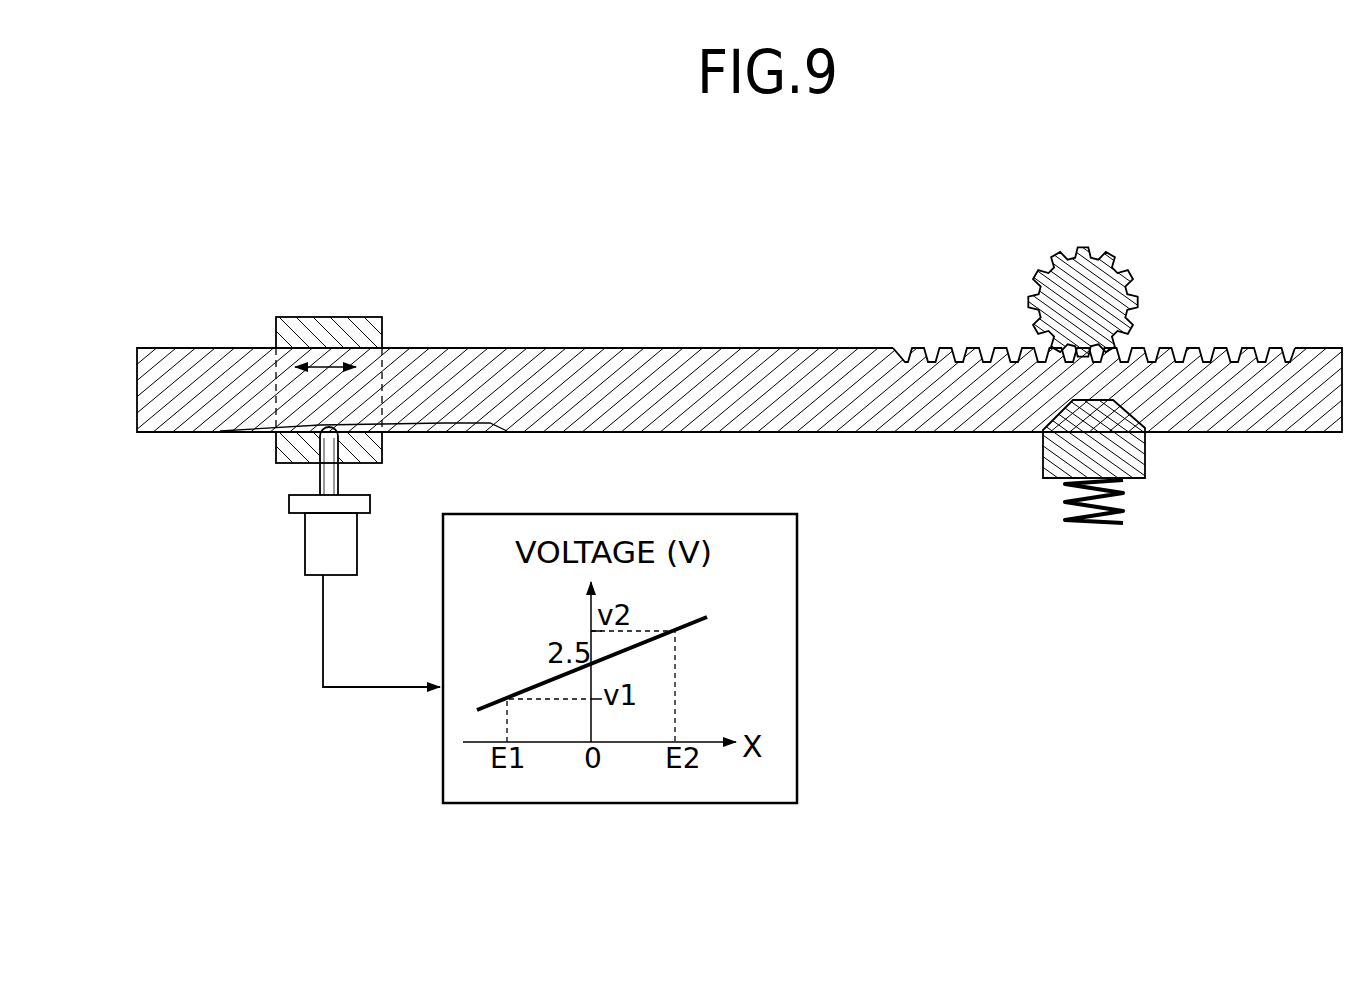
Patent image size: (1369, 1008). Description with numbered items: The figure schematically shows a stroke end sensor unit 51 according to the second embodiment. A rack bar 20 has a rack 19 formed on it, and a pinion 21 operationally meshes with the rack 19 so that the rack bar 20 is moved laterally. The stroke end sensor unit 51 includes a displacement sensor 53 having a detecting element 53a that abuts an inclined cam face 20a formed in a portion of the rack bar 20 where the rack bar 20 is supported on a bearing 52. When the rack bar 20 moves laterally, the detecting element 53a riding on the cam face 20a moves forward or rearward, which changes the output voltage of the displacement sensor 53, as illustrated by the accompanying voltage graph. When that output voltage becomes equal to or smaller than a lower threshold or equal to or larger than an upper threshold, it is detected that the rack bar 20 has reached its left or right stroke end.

The rack 19 is at (1165, 348).
The rack bar 20 is at (744, 338).
The inclined cam face 20a is at (443, 425).
The pinion 21 is at (1055, 290).
The stroke end sensor unit 51 is at (281, 518).
The bearing 52 is at (305, 325).
The displacement sensor 53 is at (303, 551).
The detecting element 53a is at (325, 472).